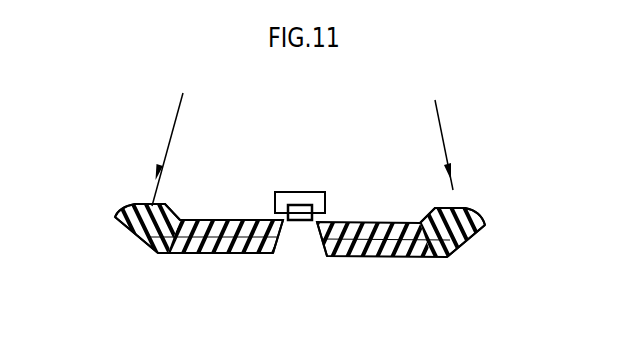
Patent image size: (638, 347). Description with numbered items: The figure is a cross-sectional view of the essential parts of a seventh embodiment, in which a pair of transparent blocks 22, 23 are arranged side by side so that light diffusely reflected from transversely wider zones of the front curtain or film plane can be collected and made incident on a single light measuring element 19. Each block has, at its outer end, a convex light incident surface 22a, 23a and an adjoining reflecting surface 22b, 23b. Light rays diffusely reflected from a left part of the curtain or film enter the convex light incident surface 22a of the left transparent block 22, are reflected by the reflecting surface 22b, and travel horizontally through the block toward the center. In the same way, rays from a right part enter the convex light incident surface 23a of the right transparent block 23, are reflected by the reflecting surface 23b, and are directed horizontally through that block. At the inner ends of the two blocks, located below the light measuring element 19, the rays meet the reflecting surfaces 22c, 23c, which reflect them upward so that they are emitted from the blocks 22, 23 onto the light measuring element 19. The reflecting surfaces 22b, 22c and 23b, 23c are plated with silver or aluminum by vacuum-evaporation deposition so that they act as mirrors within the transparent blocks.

The light measuring element 19 is at (302, 191).
The transparent block 22 is at (228, 220).
The convex light incident surface 22a is at (132, 205).
The reflecting surface 22b is at (124, 222).
The reflecting surface 22c is at (279, 253).
The transparent block 23 is at (373, 221).
The convex light incident surface 23a is at (462, 210).
The reflecting surface 23b is at (455, 242).
The reflecting surface 23c is at (318, 254).